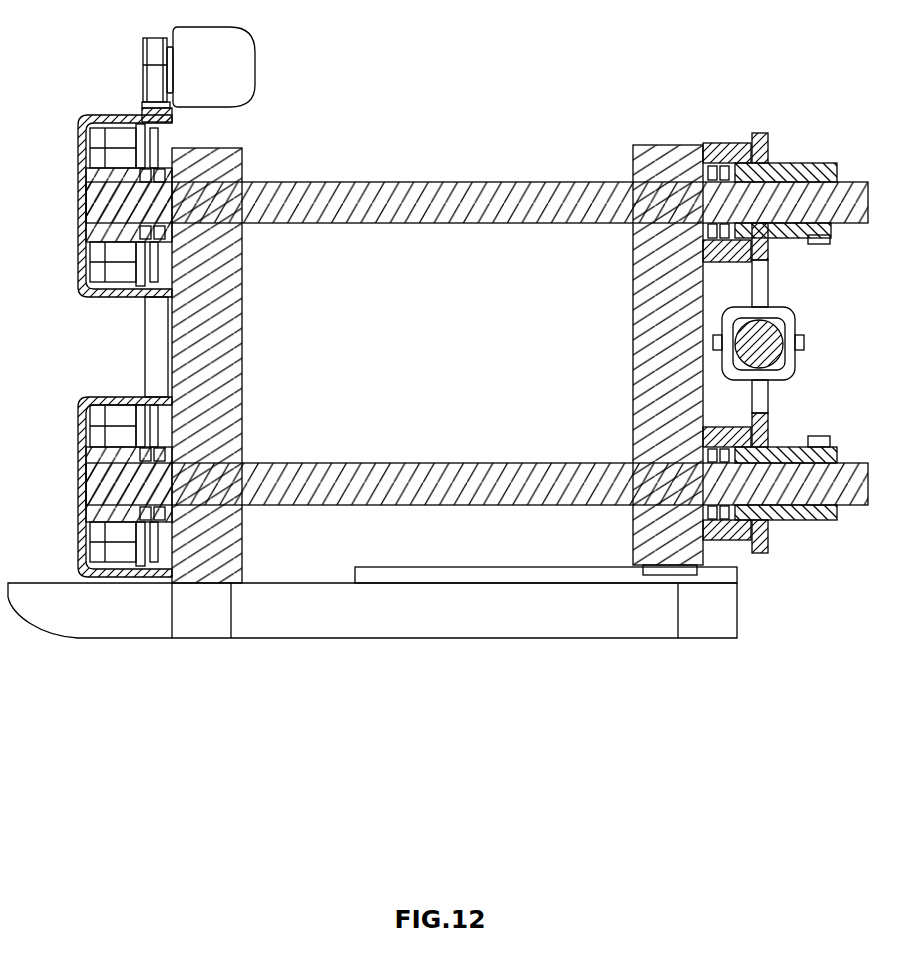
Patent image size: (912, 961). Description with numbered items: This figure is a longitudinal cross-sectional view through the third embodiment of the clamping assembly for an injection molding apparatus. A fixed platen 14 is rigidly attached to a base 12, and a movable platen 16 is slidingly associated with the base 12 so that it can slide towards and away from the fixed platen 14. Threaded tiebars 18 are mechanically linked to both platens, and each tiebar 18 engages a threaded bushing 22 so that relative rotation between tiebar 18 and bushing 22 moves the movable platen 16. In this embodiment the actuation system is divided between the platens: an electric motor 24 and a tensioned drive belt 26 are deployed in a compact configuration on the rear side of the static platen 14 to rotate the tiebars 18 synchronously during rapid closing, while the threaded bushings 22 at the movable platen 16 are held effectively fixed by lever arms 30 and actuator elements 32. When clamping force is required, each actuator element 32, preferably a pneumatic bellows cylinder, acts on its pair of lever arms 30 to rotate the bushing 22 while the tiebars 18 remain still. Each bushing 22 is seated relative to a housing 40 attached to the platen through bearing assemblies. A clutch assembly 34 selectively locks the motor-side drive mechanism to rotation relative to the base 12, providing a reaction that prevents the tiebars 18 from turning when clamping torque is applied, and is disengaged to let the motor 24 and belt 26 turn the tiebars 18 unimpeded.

The base 12 is at (457, 622).
The fixed platen 14 is at (233, 341).
The movable platen 16 is at (652, 347).
The tiebar 18 is at (435, 212).
The threaded bushing 22 is at (833, 163).
The electric motor 24 is at (243, 60).
The drive belt 26 is at (160, 550).
The lever arm 30 is at (760, 133).
The actuator element 32 is at (765, 348).
The clutch assembly 34 is at (107, 555).
The housing 40 is at (713, 143).